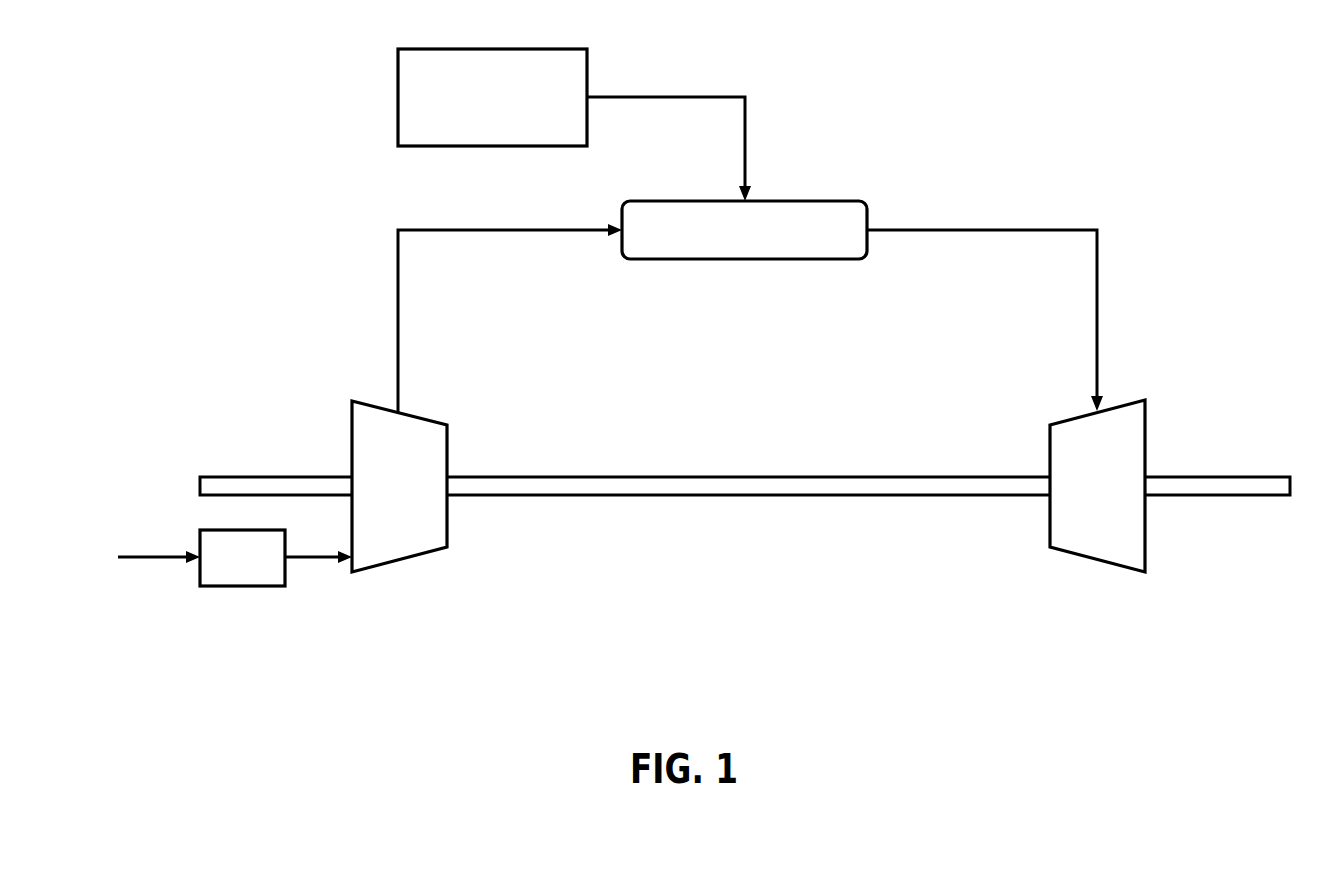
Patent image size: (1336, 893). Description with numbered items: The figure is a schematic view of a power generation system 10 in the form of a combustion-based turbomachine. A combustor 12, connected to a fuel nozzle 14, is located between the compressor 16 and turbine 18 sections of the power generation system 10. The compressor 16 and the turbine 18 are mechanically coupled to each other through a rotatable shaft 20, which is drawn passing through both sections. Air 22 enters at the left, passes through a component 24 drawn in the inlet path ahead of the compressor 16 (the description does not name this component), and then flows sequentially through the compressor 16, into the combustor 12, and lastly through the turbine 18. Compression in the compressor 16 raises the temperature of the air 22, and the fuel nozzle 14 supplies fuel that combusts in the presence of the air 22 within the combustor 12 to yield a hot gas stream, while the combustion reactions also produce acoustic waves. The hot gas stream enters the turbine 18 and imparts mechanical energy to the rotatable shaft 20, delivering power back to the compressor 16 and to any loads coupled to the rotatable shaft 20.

The power generation system 10 is at (322, 172).
The combustor 12 is at (725, 250).
The fuel nozzle 14 is at (473, 116).
The compressor 16 is at (380, 504).
The turbine 18 is at (1079, 504).
The rotatable shaft 20 is at (752, 496).
The air 22 is at (137, 557).
The air filter / valve 24 is at (224, 578).